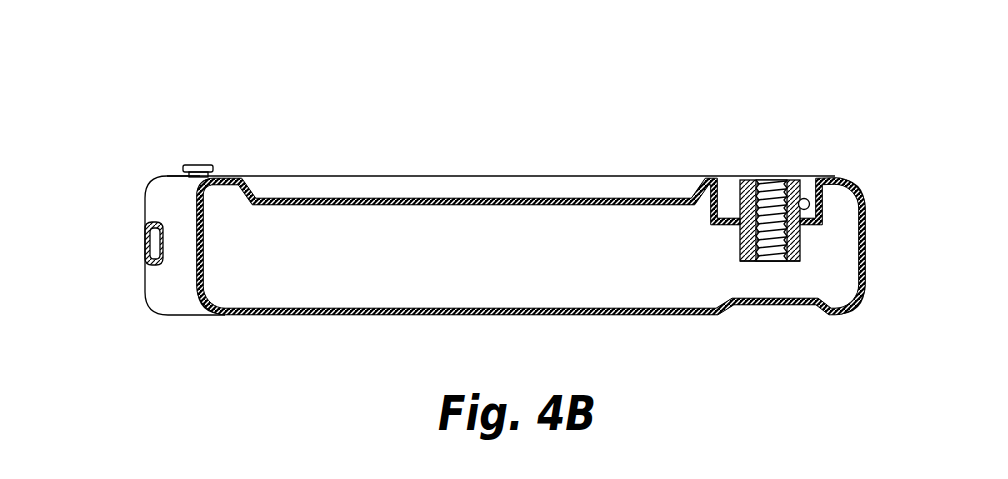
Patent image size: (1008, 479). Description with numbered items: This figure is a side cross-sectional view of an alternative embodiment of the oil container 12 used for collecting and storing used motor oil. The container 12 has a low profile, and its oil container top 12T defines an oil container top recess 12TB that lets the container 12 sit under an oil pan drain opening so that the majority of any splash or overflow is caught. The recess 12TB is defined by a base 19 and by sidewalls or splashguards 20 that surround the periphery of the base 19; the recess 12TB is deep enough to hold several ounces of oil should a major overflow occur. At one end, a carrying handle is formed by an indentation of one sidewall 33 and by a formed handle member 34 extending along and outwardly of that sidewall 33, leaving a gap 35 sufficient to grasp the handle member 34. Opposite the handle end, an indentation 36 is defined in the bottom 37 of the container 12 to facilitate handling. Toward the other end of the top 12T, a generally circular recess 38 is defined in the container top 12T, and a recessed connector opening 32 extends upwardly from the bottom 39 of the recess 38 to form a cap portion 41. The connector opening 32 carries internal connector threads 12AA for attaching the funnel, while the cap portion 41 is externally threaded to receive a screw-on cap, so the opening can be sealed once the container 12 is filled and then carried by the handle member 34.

The oil container 12 is at (581, 106).
The oil container top recess 12TB is at (300, 178).
The oil container top 12T is at (710, 177).
The internal connector threads 12AA is at (770, 261).
The base 19 is at (517, 196).
The sidewalls or splashguards 20 is at (251, 190).
The recessed connector opening 32 is at (777, 160).
The sidewall 33 is at (197, 268).
The handle member 34 is at (155, 268).
The gap 35 is at (177, 207).
The indentation 36 is at (770, 306).
The bottom 37 is at (360, 316).
The circular recess 38 is at (728, 178).
The bottom of recess 39 is at (725, 230).
The cap portion 41 is at (808, 210).